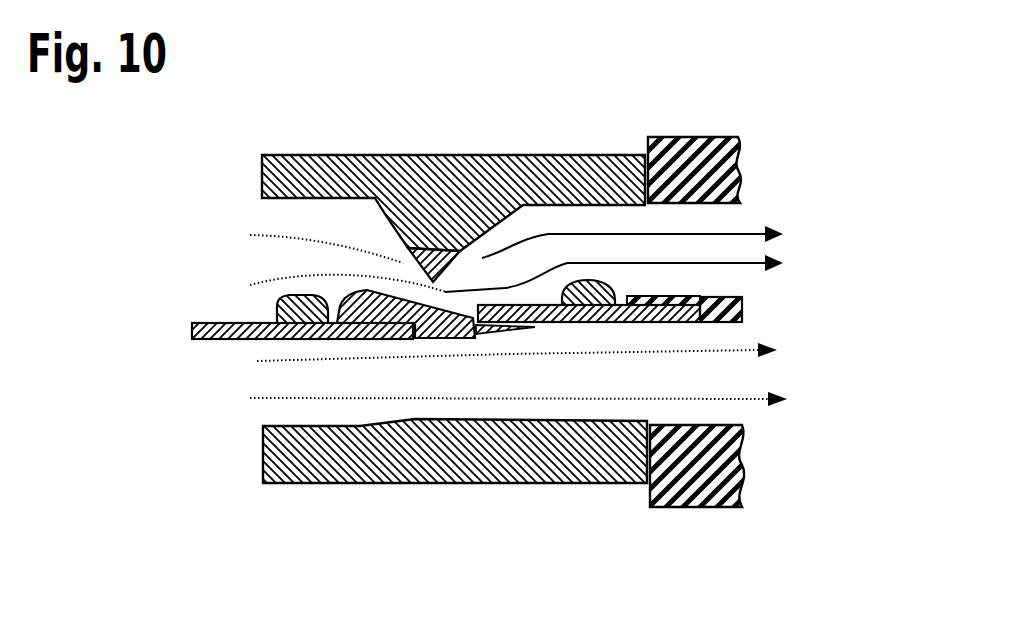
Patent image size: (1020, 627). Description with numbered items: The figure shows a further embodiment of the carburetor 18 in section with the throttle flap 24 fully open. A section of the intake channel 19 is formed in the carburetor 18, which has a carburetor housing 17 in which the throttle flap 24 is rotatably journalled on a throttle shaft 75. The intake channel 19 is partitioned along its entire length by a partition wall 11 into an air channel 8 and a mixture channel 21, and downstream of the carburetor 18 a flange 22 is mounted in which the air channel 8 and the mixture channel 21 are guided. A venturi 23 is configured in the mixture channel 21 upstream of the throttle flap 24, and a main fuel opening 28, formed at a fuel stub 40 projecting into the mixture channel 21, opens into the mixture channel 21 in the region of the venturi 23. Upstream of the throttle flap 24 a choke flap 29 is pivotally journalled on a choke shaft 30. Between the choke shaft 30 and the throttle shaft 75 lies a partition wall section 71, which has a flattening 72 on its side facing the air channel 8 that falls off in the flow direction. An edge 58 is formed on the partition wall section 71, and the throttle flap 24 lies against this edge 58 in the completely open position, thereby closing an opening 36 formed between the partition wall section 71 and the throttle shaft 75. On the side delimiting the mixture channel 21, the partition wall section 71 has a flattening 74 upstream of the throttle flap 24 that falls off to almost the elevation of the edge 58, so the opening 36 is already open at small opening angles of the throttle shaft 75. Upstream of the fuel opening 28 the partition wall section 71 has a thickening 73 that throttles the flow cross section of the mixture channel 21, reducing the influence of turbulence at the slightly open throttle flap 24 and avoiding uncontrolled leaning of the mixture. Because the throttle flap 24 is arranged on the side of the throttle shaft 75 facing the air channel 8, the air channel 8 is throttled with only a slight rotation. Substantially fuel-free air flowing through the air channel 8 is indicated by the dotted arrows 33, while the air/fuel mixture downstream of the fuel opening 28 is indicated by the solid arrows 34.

The air channel 8 is at (504, 431).
The partition wall 11 is at (680, 445).
The carburetor housing 17 is at (340, 462).
The carburetor 18 is at (439, 144).
The intake channel 19 is at (486, 431).
The mixture channel 21 is at (579, 208).
The flange 22 is at (717, 137).
The venturi 23 is at (453, 166).
The throttle flap 24 is at (606, 318).
The main fuel opening 28 is at (450, 252).
The choke flap 29 is at (192, 332).
The choke shaft 30 is at (292, 308).
The arrows (fuel-free air flow) 33 is at (737, 402).
The arrows (air/fuel mixture flow) 34 is at (738, 232).
The opening 36 is at (610, 450).
The fuel stub 40 is at (432, 248).
The edge 58 is at (494, 330).
The partition wall section 71 is at (432, 338).
The flattening 72 is at (511, 458).
The thickening 73 is at (428, 289).
The flattening 74 is at (442, 289).
The throttle shaft 75 is at (597, 290).